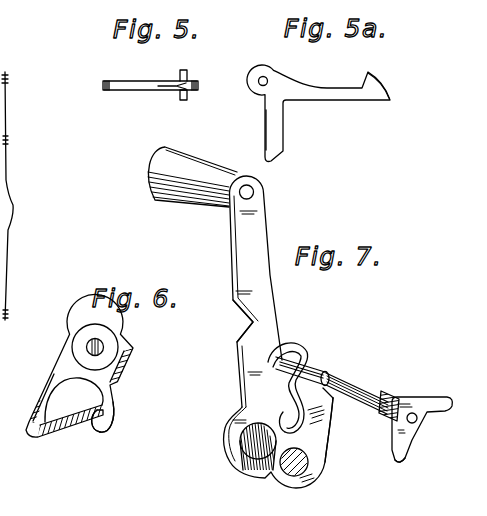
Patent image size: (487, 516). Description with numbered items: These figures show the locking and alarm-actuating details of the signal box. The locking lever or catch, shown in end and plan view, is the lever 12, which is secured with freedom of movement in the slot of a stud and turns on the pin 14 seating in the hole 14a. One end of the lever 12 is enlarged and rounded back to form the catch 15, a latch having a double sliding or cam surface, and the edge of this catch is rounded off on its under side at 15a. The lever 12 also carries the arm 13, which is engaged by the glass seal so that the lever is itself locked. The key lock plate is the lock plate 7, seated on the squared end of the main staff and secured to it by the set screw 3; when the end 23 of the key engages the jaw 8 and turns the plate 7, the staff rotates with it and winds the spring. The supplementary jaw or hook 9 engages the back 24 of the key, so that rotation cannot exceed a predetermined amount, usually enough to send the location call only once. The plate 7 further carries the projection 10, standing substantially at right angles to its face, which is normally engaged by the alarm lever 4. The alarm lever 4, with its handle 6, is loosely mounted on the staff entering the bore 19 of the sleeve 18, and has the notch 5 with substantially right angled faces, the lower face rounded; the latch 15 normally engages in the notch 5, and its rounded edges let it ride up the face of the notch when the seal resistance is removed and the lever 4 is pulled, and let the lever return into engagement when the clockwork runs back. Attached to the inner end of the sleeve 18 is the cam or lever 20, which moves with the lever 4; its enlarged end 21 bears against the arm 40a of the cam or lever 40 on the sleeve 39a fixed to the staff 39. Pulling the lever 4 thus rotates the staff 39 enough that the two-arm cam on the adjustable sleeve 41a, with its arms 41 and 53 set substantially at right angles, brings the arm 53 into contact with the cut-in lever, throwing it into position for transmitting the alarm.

In FIG. 6, the set screw 3 is at (103, 346).
In FIG. 7, the alarm lever 4 is at (258, 238).
In FIG. 7, the notch 5 is at (245, 312).
In FIG. 7, the handle 6 is at (193, 202).
In FIG. 6, the lock plate 7 is at (55, 358).
In FIG. 6, the jaw 8 is at (29, 414).
In FIG. 6, the supplementary jaw or hook 9 is at (105, 425).
In FIG. 6, the projection 10 is at (137, 375).
In FIG. 5A, the lever 12 is at (326, 95).
In FIG. 5, the arm 13 is at (135, 90).
In FIG. 5A, the arm 13 is at (278, 132).
In FIG. 5, the pin 14 is at (186, 71).
In FIG. 5A, the hole 14a is at (267, 78).
In FIG. 5, the catch 15 is at (171, 90).
In FIG. 5A, the catch 15 is at (388, 94).
In FIG. 5, the rounded edge 15a is at (187, 93).
In FIG. 7, the sleeve 18 is at (248, 455).
In FIG. 7, the bore 19 is at (288, 470).
In FIG. 7, the cam or lever 20 is at (317, 467).
In FIG. 7, the enlarged end 21 is at (332, 390).
In FIG. 6, the end of key 23 is at (43, 438).
In FIG. 6, the back of key 24 is at (100, 433).
In FIG. 7, the staff 39 is at (364, 393).
In FIG. 7, the sleeve 39a is at (312, 357).
In FIG. 7, the cam or lever 40 is at (297, 343).
In FIG. 7, the arm 40a is at (302, 393).
In FIG. 7, the arm 41 is at (440, 397).
In FIG. 7, the sleeve 41a is at (387, 420).
In FIG. 7, the arm 53 is at (403, 461).